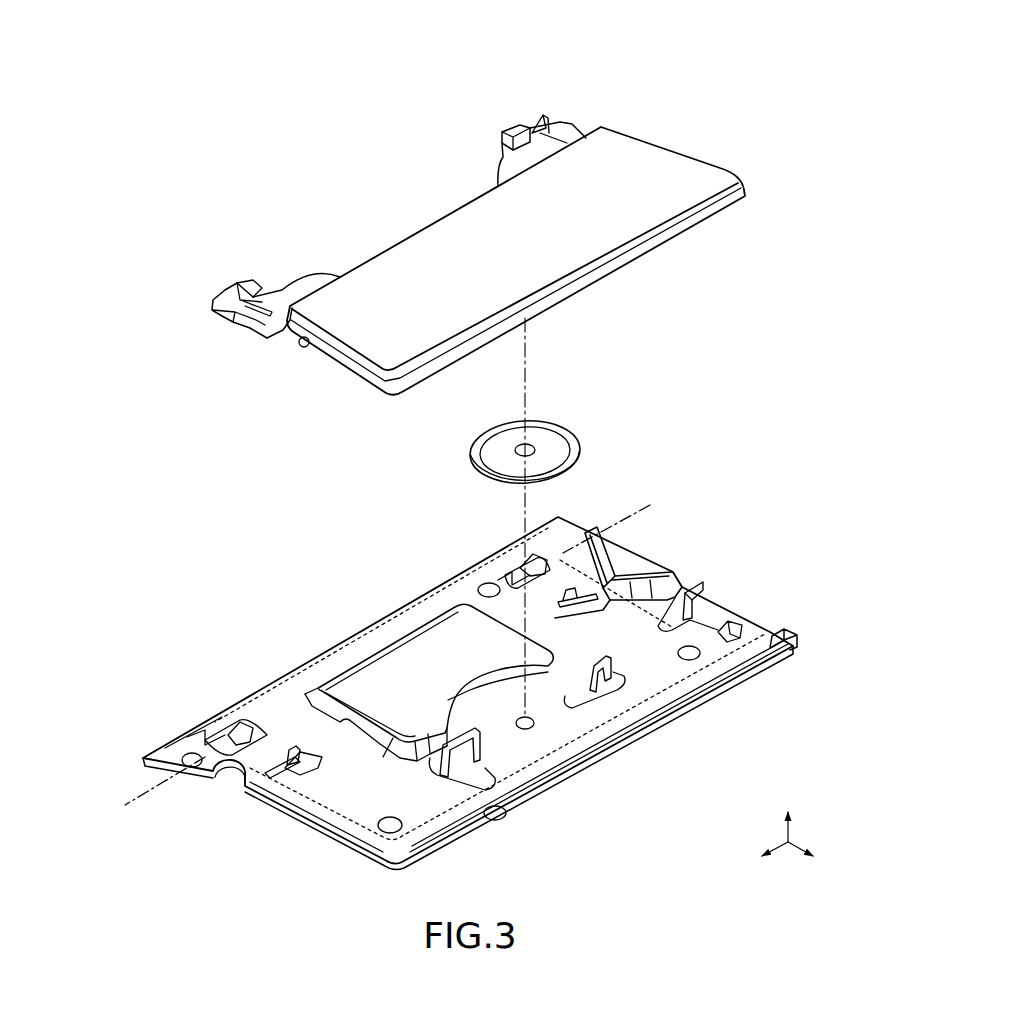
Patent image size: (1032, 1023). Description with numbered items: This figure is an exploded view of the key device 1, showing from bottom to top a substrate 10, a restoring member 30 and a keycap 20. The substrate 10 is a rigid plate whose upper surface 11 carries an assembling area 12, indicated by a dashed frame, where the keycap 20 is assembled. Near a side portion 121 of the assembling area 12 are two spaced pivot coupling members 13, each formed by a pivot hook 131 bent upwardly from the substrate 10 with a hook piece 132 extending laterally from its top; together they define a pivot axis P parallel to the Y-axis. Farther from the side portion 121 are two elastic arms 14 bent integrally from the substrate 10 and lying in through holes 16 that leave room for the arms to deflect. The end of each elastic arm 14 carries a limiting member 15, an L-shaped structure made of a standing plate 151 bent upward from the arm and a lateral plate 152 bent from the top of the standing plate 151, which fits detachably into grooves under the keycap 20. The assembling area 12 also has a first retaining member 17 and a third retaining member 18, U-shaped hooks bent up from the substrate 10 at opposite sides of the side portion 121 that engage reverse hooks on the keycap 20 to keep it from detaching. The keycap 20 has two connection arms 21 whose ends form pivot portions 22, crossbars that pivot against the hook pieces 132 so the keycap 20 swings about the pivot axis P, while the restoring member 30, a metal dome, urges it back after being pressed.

The key device 1 is at (691, 100).
The substrate 10 is at (374, 860).
The upper surface 11 is at (407, 613).
The assembling area 12 is at (384, 626).
The side portion 121 is at (363, 643).
The pivot coupling member 13 is at (521, 548).
The pivot hook 131 is at (508, 565).
The hook piece 132 is at (550, 553).
The elastic arm 14 is at (580, 590).
The limiting member 15 is at (255, 875).
The standing plate 151 is at (278, 770).
The lateral plate 152 is at (302, 764).
The through hole 16 is at (690, 612).
The first retaining member 17 is at (447, 782).
The third retaining member 18 is at (610, 678).
The keycap 20 is at (440, 233).
The connection arm 21 is at (307, 290).
The pivot portion 22 is at (248, 284).
The restoring member 30 is at (563, 428).
The pivot axis P is at (650, 505).